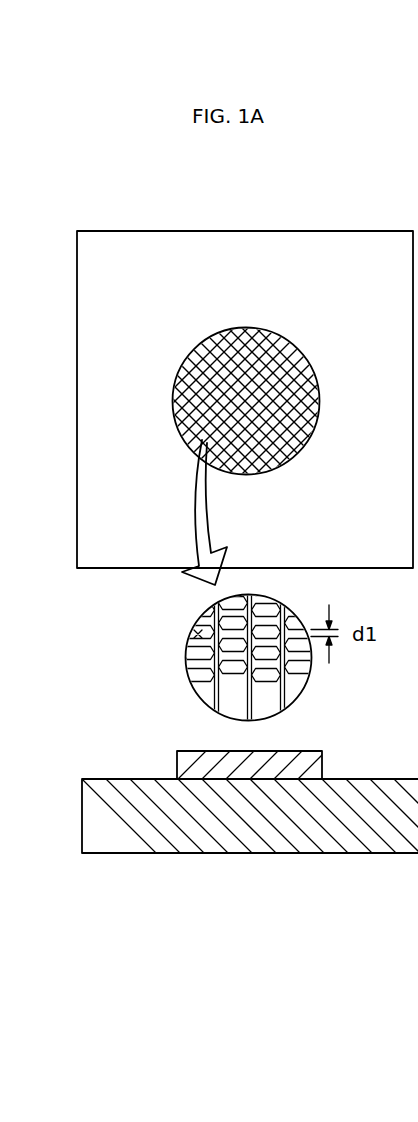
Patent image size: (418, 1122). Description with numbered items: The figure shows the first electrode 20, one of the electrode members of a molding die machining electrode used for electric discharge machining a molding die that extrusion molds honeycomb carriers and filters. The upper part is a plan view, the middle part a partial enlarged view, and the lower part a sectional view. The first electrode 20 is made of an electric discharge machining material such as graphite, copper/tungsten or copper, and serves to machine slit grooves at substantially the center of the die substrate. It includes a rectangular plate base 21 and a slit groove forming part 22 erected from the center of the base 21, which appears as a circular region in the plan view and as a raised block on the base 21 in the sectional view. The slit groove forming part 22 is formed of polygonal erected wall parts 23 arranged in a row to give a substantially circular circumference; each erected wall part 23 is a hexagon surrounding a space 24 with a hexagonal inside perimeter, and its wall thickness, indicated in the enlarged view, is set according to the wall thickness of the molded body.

The first electrode 20 is at (284, 198).
The base 21 is at (390, 779).
The slit groove forming part 22 is at (220, 328).
The erected wall part 23 is at (207, 677).
The space 24 is at (196, 634).